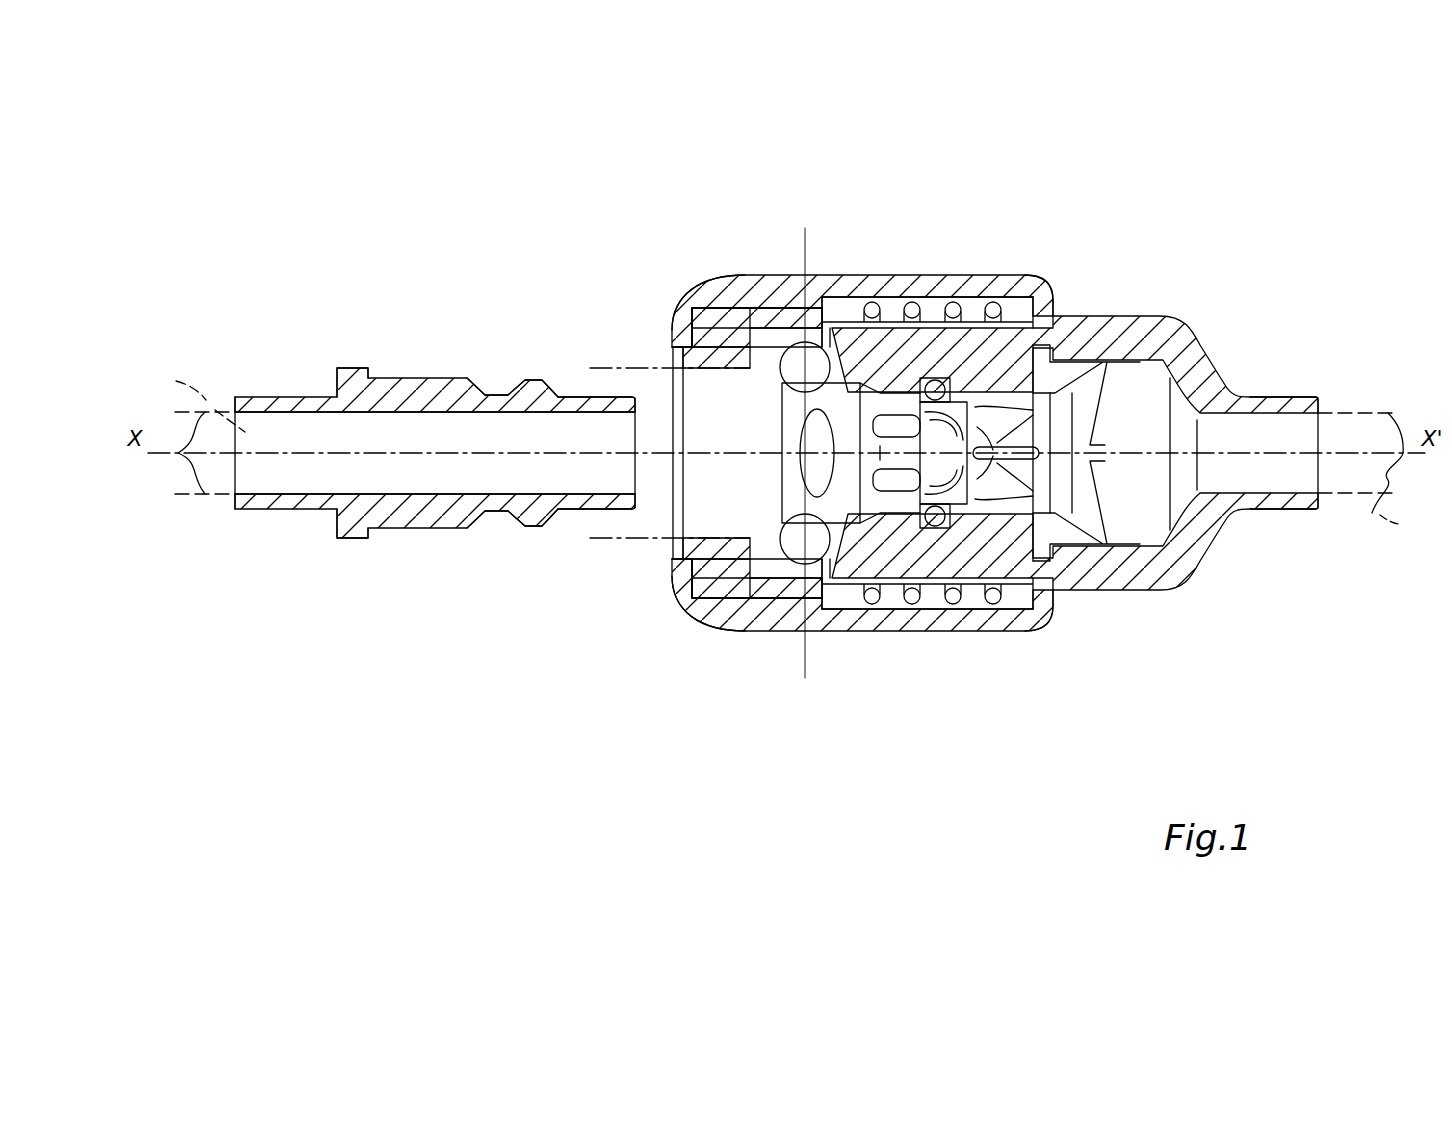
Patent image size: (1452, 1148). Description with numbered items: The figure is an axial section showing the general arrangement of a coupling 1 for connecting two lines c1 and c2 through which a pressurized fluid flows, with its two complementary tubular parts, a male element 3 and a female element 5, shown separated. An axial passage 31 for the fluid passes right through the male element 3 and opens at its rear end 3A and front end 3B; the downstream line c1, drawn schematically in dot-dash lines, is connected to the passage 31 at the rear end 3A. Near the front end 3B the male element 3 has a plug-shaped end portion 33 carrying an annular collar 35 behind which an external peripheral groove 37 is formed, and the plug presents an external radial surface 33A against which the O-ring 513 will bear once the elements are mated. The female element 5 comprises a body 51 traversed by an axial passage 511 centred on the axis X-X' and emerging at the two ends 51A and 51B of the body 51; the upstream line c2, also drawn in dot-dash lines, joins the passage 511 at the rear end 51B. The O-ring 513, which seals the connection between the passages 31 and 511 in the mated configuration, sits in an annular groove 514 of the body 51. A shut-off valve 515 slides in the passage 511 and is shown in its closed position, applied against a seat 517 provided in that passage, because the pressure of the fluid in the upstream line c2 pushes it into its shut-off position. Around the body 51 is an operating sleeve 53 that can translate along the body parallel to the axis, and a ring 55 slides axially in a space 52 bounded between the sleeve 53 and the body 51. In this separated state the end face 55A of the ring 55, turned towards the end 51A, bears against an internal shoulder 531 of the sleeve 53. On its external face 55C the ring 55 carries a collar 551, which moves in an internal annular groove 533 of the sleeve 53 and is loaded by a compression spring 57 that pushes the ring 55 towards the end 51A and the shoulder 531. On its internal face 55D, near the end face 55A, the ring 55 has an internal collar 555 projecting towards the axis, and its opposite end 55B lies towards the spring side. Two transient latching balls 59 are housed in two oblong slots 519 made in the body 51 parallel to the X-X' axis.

The coupling 1 is at (285, 753).
The male element 3 is at (284, 388).
The rear end of the male element 3A is at (234, 466).
The front end of the male element 3B is at (637, 442).
The axial passage 31 is at (326, 472).
The plug-shaped end portion 33 is at (410, 520).
The external radial surface of the plug 33A is at (576, 514).
The annular collar 35 is at (535, 380).
The external peripheral groove 37 is at (500, 394).
The female element 5 is at (1020, 258).
The body 51 is at (1112, 330).
The front end of the body 51A is at (673, 472).
The rear end of the body 51B is at (1320, 437).
The axial passage 511 is at (717, 512).
The O-ring 513 is at (940, 532).
The annular groove 514 is at (963, 542).
The shut-off valve 515 is at (1167, 572).
The seat 517 is at (1095, 556).
The oblong slots 519 is at (766, 358).
The space 52 is at (992, 292).
The operating sleeve 53 is at (747, 285).
The internal shoulder 531 is at (705, 307).
The internal annular groove 533 is at (968, 307).
The ring 55 is at (768, 592).
The end face of the ring 55A is at (690, 581).
The rear end of sleeve 55B is at (905, 586).
The external face of the ring 55C is at (700, 328).
The internal face of the ring 55D is at (712, 365).
The collar 551 is at (830, 600).
The internal collar 555 is at (733, 592).
The compression spring 57 is at (923, 307).
The transient latching balls 59 is at (813, 352).
The line C1 c1 is at (197, 395).
The line C2 c2 is at (1402, 525).